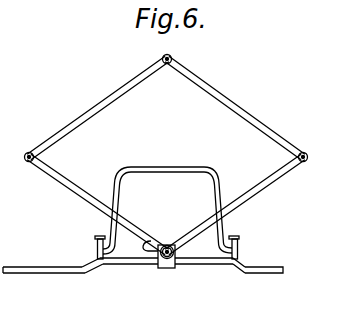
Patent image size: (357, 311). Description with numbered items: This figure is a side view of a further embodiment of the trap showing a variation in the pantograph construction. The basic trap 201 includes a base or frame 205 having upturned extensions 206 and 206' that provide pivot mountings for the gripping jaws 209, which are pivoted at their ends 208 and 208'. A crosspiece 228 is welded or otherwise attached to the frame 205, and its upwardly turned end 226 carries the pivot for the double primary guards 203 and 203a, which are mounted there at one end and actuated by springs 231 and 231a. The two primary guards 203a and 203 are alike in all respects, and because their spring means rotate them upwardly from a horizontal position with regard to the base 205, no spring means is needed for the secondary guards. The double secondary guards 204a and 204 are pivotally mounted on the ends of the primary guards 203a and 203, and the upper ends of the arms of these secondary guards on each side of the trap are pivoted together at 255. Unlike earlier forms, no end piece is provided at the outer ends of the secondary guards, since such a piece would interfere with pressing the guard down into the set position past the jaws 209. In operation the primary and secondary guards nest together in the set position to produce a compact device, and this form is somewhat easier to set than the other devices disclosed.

The basic trap 201 is at (136, 265).
The base 205 is at (249, 273).
The upturned extension 206 is at (82, 277).
The upturned extension 206' is at (261, 258).
The jaw pivot end 208 is at (80, 245).
The jaw pivot end 208' is at (262, 239).
The gripping jaws 209 is at (188, 167).
The upwardly turned end 226 is at (162, 268).
The crosspiece 228 is at (171, 263).
The spring 231 is at (170, 248).
The spring 231a is at (158, 247).
The pivot 255 is at (173, 59).
The primary guard 203 is at (266, 181).
The primary guard 203a is at (92, 200).
The secondary guard 204 is at (268, 129).
The secondary guard 204a is at (85, 112).